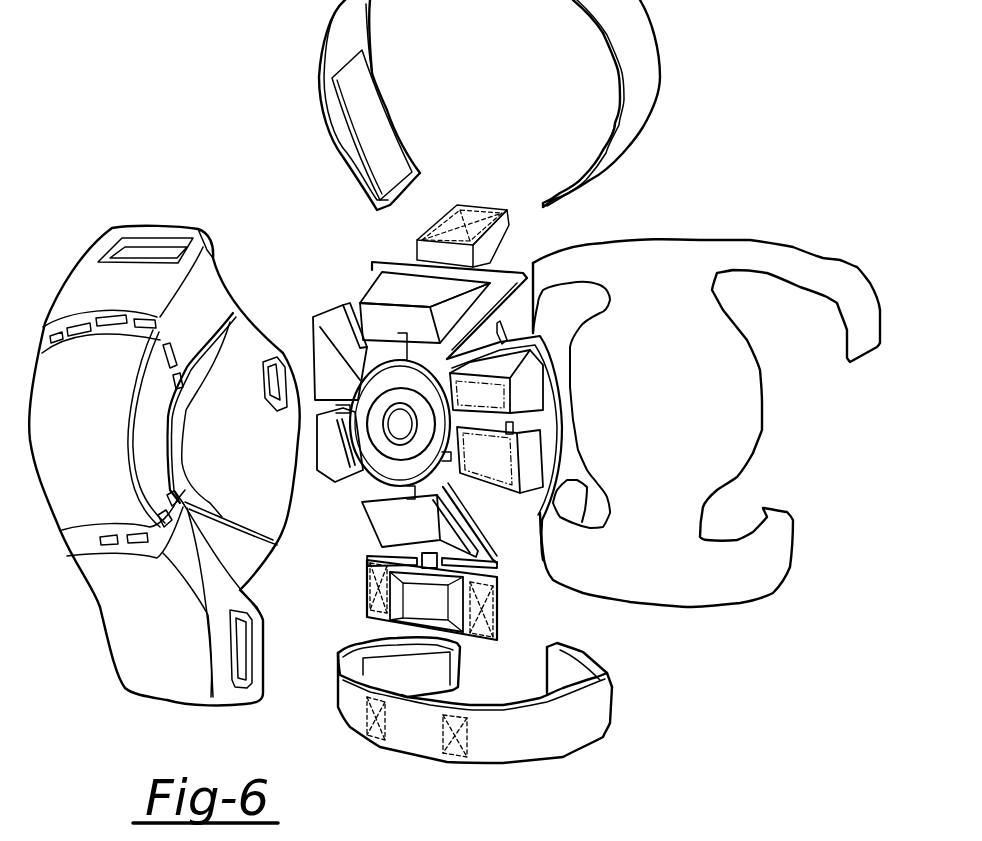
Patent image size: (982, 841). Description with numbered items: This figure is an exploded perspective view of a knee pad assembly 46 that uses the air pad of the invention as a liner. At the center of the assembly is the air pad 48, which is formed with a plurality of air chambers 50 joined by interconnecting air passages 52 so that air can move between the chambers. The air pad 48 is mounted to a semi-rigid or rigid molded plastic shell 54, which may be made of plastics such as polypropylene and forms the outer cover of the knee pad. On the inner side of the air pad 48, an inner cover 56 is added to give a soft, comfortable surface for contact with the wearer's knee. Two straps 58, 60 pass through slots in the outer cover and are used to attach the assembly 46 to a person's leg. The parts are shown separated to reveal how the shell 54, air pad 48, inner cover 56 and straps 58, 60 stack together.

The knee pad assembly 46 is at (257, 188).
The air pad 48 is at (511, 262).
The air chambers 50 is at (367, 298).
The interconnecting air passages 52 is at (507, 433).
The molded plastic shell 54 is at (68, 270).
The inner cover 56 is at (763, 420).
The strap 58 is at (655, 95).
The strap 60 is at (522, 763).